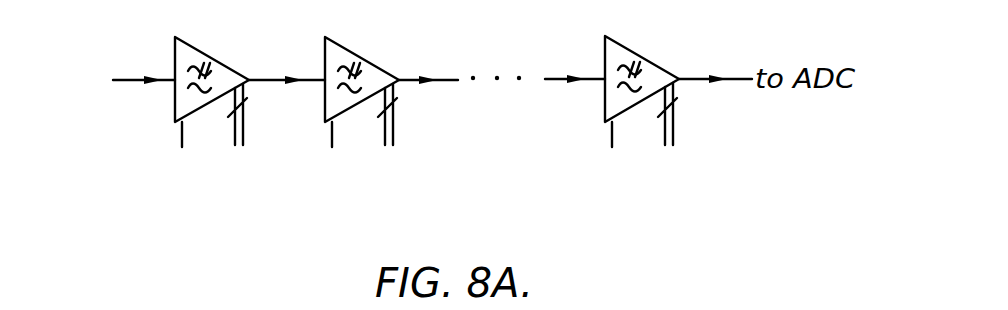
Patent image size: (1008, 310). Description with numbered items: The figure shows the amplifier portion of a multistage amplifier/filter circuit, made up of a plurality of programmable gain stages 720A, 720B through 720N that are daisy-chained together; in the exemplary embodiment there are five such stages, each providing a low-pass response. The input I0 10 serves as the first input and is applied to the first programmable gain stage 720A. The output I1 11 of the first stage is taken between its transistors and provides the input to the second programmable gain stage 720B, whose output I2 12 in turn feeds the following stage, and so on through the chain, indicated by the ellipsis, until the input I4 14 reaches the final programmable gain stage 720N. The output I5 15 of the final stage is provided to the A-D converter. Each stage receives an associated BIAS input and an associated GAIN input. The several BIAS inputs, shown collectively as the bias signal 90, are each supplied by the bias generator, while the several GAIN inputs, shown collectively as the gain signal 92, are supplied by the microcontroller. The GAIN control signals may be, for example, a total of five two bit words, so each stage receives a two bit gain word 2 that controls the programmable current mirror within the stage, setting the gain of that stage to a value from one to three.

The programmable gain stage 720A is at (207, 54).
The programmable gain stage 720B is at (357, 54).
The programmable gain stage 720N is at (636, 53).
The input I0 10 is at (144, 64).
The stage output I1 11 is at (287, 64).
The stage output I2 12 is at (428, 64).
The stage input I4 14 is at (575, 62).
The output I5 15 is at (715, 62).
The two bit gain word 2 is at (462, 114).
The bias signal 90 is at (385, 180).
The gain signal 92 is at (466, 196).